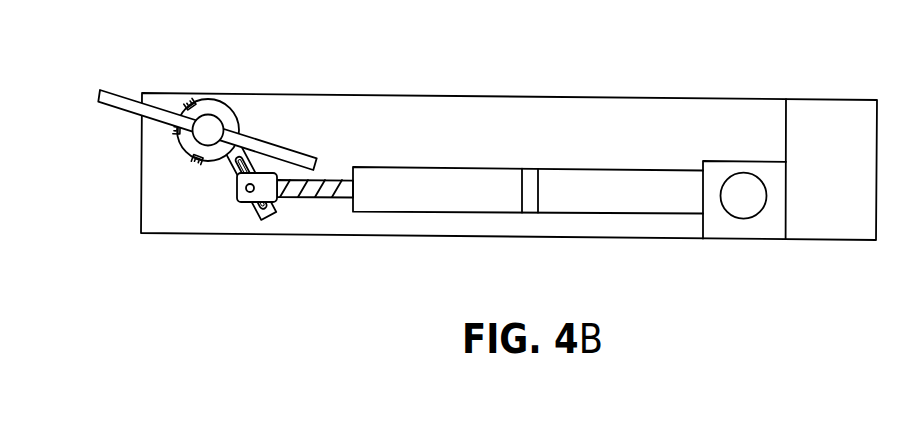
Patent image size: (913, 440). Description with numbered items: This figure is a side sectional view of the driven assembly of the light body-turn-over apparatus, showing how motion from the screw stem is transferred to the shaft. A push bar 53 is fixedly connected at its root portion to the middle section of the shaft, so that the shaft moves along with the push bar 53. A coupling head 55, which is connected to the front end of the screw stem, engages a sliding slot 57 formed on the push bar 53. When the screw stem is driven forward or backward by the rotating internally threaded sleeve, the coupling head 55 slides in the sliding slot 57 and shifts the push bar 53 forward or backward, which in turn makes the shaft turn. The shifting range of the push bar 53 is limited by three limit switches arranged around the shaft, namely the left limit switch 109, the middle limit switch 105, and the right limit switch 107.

The push bar 53 is at (263, 221).
The coupling head 55 is at (255, 189).
The sliding slot 57 is at (240, 160).
The middle limit switch 105 is at (178, 138).
The right limit switch 107 is at (191, 103).
The left limit switch 109 is at (197, 161).